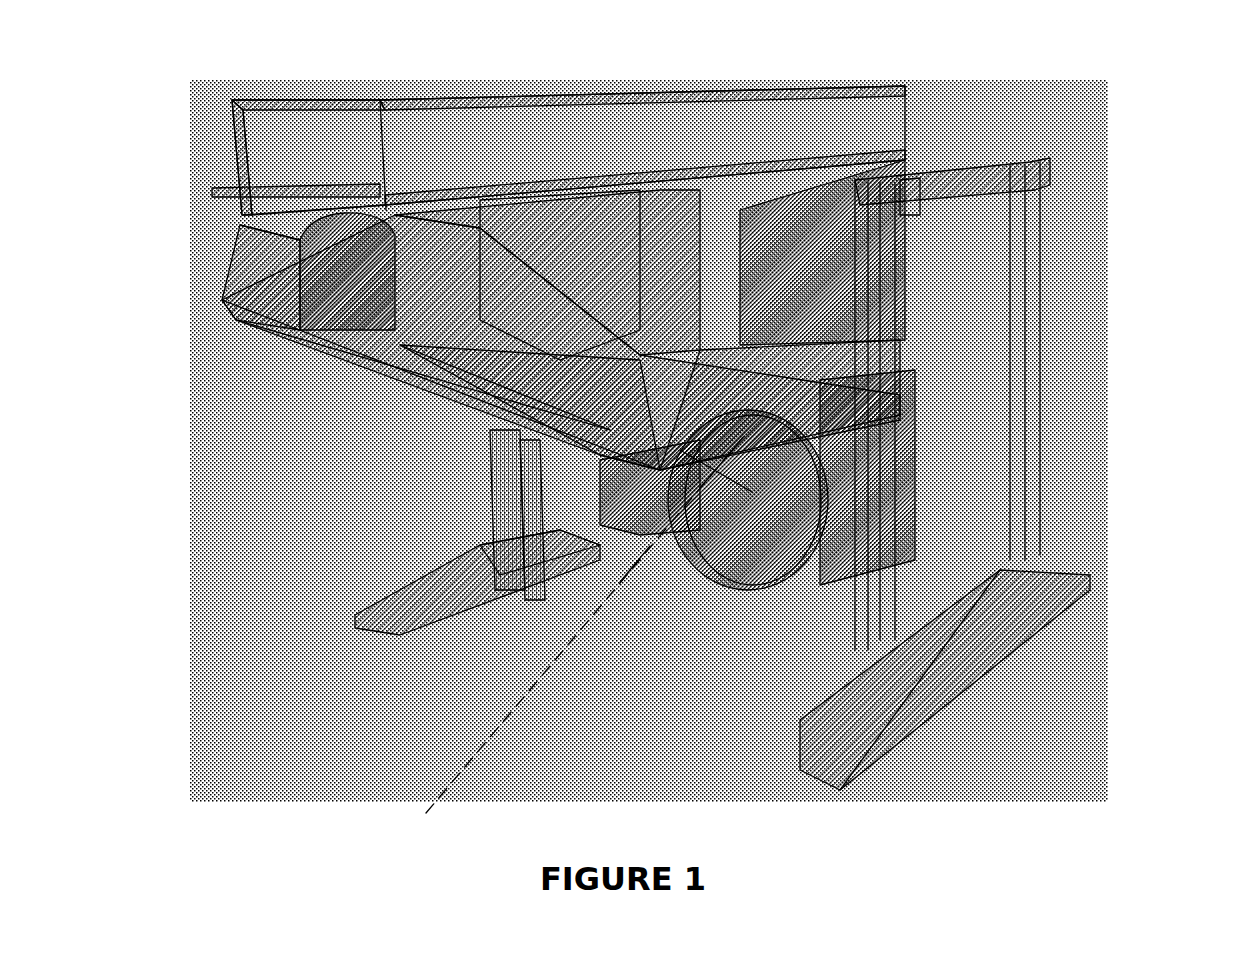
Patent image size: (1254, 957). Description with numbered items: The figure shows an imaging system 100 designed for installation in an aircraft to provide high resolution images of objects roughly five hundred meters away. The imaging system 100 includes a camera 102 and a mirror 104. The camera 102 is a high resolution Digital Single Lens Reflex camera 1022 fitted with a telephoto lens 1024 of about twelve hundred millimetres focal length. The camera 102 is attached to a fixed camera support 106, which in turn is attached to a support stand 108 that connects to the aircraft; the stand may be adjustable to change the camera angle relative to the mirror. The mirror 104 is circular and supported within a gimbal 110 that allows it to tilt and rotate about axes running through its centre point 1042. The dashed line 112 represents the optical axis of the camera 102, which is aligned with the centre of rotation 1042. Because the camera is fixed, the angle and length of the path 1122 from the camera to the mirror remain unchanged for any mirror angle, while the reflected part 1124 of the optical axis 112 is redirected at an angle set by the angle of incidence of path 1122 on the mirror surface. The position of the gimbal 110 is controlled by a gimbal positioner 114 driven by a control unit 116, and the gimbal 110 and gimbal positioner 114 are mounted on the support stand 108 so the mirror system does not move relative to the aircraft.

The imaging system 100 is at (932, 100).
The camera 102 is at (378, 308).
The Digital Single Lens Reflex camera 1022 is at (412, 268).
The telephoto lens 1024 is at (505, 358).
The mirror 104 is at (705, 518).
The centre point 1042 is at (752, 492).
The fixed camera support 106 is at (225, 305).
The support stand 108 is at (955, 672).
The gimbal 110 is at (758, 595).
The optical axis 112 is at (528, 717).
The optical axis path from camera to mirror 1122 is at (715, 462).
The reflected part of the optical axis 1124 is at (635, 615).
The gimbal positioner 114 is at (918, 490).
The control unit 116 is at (830, 290).